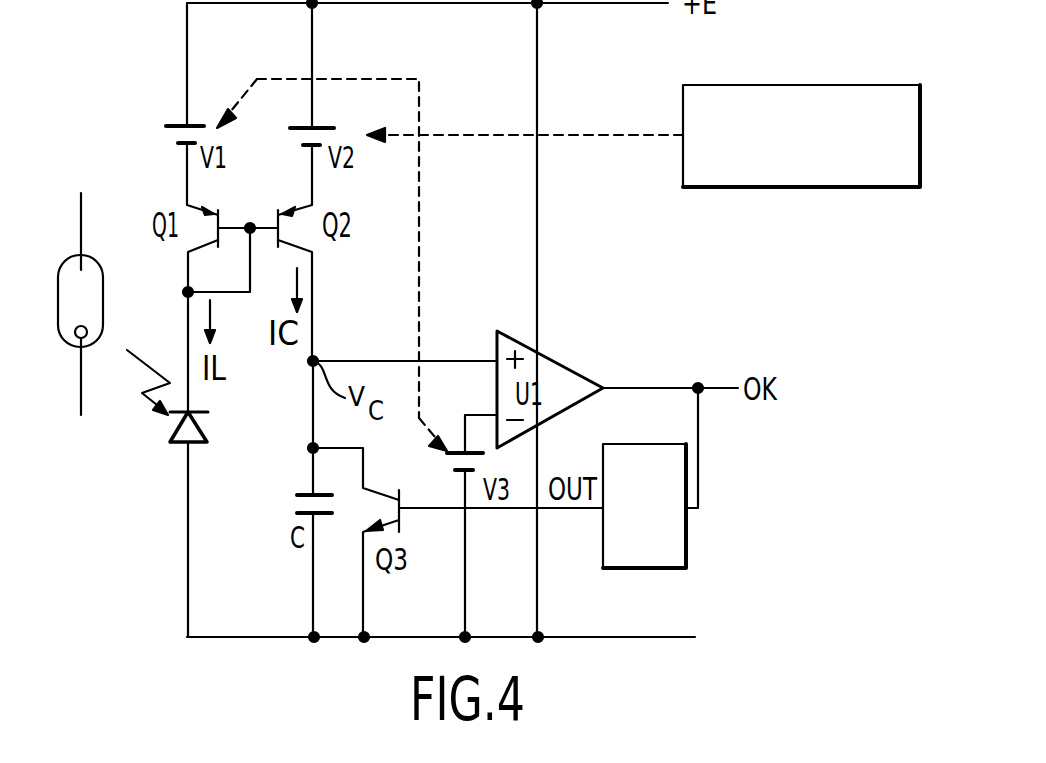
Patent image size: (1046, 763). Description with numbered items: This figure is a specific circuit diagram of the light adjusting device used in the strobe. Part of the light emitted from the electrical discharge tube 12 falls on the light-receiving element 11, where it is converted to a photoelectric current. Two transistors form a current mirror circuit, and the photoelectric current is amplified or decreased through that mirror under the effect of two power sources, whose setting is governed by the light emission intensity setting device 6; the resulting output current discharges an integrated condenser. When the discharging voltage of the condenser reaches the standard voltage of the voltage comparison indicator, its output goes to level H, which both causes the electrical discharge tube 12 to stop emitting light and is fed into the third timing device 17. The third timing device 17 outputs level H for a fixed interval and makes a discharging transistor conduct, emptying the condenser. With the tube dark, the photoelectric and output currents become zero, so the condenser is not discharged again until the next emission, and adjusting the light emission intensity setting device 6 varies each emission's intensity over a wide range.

The light emission intensity setting device 6 is at (770, 187).
The light-receiving element 11 is at (203, 432).
The electrical discharge tube 12 is at (104, 297).
The third timing device 17 is at (686, 537).